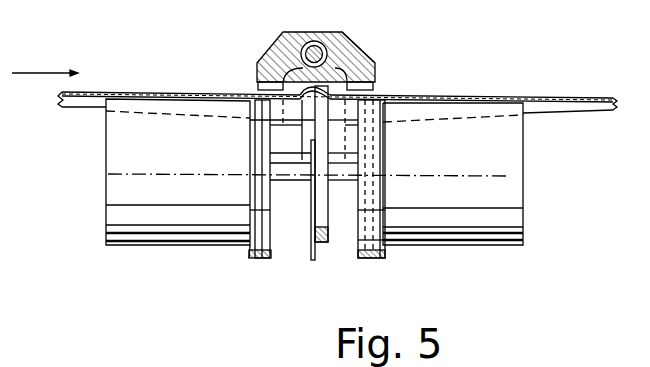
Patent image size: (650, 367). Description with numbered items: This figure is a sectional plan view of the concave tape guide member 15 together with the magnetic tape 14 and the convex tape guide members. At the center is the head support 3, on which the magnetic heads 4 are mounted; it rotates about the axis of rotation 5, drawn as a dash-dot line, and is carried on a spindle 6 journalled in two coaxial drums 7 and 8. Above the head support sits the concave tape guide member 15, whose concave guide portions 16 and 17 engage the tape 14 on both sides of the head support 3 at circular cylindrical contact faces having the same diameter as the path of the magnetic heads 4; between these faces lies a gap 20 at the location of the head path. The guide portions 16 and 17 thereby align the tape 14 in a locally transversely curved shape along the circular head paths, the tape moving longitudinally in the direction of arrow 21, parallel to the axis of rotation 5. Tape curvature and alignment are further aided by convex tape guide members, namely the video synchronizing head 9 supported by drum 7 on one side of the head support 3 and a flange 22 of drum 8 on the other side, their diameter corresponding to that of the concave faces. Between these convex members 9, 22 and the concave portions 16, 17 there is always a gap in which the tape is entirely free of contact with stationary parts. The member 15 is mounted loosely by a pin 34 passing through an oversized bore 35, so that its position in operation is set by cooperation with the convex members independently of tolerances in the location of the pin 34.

The head support 3 is at (322, 232).
The magnetic heads 4 is at (310, 242).
The axis of rotation 5 is at (507, 180).
The spindle 6 is at (286, 183).
The drum 7 is at (150, 215).
The drum 8 is at (452, 218).
The video synchronizing head 9 is at (258, 252).
The magnetic tape 14 is at (553, 100).
The concave tape guide member 15 is at (319, 45).
The concave guide portion 16 is at (257, 63).
The concave guide portion 17 is at (372, 72).
The gap 20 is at (355, 62).
The arrow 21 is at (45, 72).
The flange 22 is at (368, 244).
The pin 34 is at (305, 44).
The bore 35 is at (314, 41).